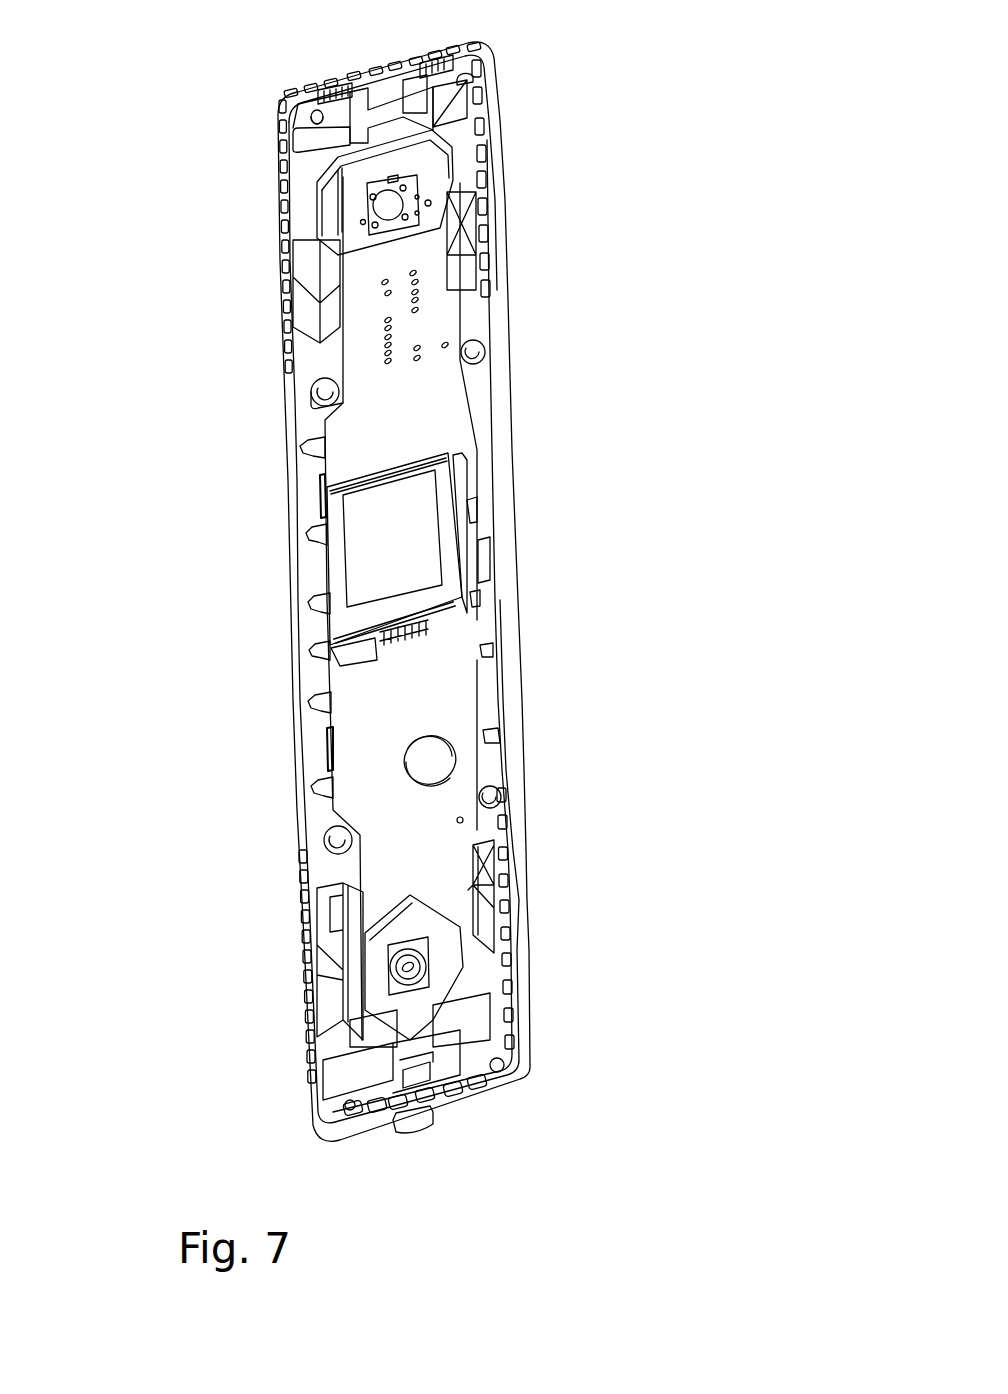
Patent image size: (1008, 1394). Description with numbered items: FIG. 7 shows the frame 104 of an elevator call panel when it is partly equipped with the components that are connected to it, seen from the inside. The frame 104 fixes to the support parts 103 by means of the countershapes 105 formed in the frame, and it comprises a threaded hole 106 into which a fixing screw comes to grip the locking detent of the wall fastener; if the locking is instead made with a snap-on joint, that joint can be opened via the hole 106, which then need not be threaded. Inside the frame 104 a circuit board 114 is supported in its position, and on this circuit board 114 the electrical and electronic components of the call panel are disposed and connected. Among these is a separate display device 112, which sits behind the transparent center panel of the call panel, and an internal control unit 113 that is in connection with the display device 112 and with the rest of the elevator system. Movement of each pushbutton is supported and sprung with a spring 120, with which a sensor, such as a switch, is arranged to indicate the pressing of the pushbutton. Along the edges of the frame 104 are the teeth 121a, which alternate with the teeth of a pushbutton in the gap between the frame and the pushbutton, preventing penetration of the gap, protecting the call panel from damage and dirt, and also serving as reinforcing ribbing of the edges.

The support parts 103 is at (320, 934).
The frame 104 is at (557, 990).
The countershapes 105 is at (465, 201).
The threaded hole 106 is at (428, 1112).
The display device 112 is at (360, 565).
The control unit 113 is at (345, 617).
The circuit board 114 is at (378, 226).
The spring 120 is at (453, 98).
The teeth of the frame 121a is at (503, 880).